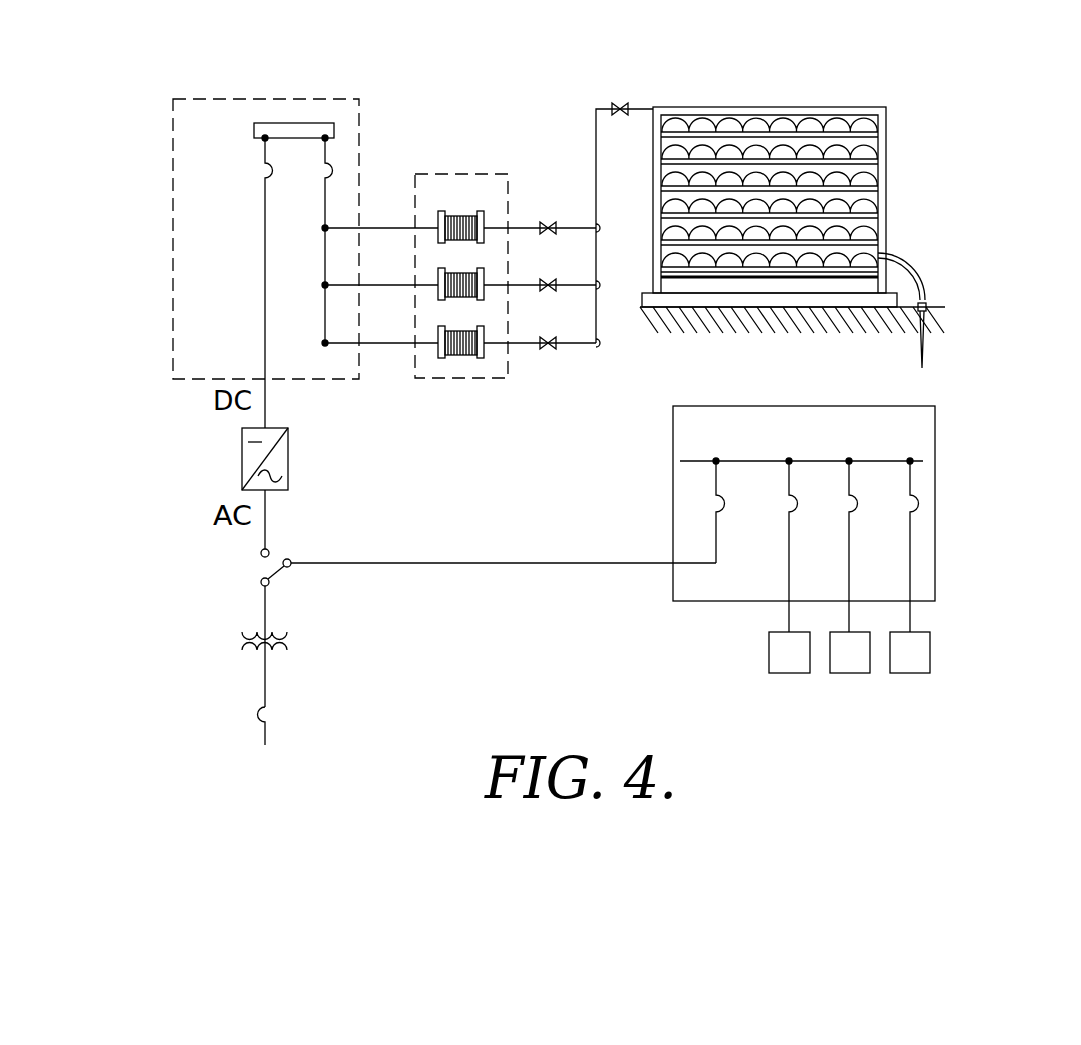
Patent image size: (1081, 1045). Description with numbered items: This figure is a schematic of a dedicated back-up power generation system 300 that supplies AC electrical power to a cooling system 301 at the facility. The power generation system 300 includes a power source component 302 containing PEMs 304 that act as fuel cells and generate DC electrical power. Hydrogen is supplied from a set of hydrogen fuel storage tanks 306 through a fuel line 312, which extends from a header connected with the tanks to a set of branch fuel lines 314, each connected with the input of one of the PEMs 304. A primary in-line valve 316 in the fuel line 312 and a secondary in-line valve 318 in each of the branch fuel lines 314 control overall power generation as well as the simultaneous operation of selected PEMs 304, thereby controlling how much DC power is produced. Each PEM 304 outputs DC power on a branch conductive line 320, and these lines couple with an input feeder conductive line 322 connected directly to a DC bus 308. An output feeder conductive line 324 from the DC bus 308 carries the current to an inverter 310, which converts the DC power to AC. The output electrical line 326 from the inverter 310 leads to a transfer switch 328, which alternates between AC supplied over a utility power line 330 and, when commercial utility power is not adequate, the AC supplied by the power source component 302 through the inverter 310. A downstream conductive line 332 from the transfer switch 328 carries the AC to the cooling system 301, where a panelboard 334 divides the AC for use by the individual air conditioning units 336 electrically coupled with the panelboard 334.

The dedicated back-up power generation system 300 is at (686, 55).
The cooling system 301 is at (994, 470).
The power source component 302 is at (428, 174).
The PEMs 304 is at (470, 211).
The hydrogen fuel storage tanks 306 is at (862, 118).
The DC bus 308 is at (299, 123).
The inverter 310 is at (290, 457).
The fuel line 312 is at (596, 114).
The branch fuel lines 314 is at (572, 347).
The primary in-line valve 316 is at (620, 103).
The secondary in-line valve 318 is at (548, 222).
The branch conductive line 320 is at (386, 345).
The input feeder conductive line 322 is at (327, 197).
The output feeder conductive line 324 is at (265, 215).
The output electrical line 326 is at (266, 531).
The transfer switch 328 is at (276, 571).
The utility power line 330 is at (266, 740).
The downstream conductive line 332 is at (460, 563).
The panelboard 334 is at (673, 446).
The air conditioning units 336 is at (898, 668).